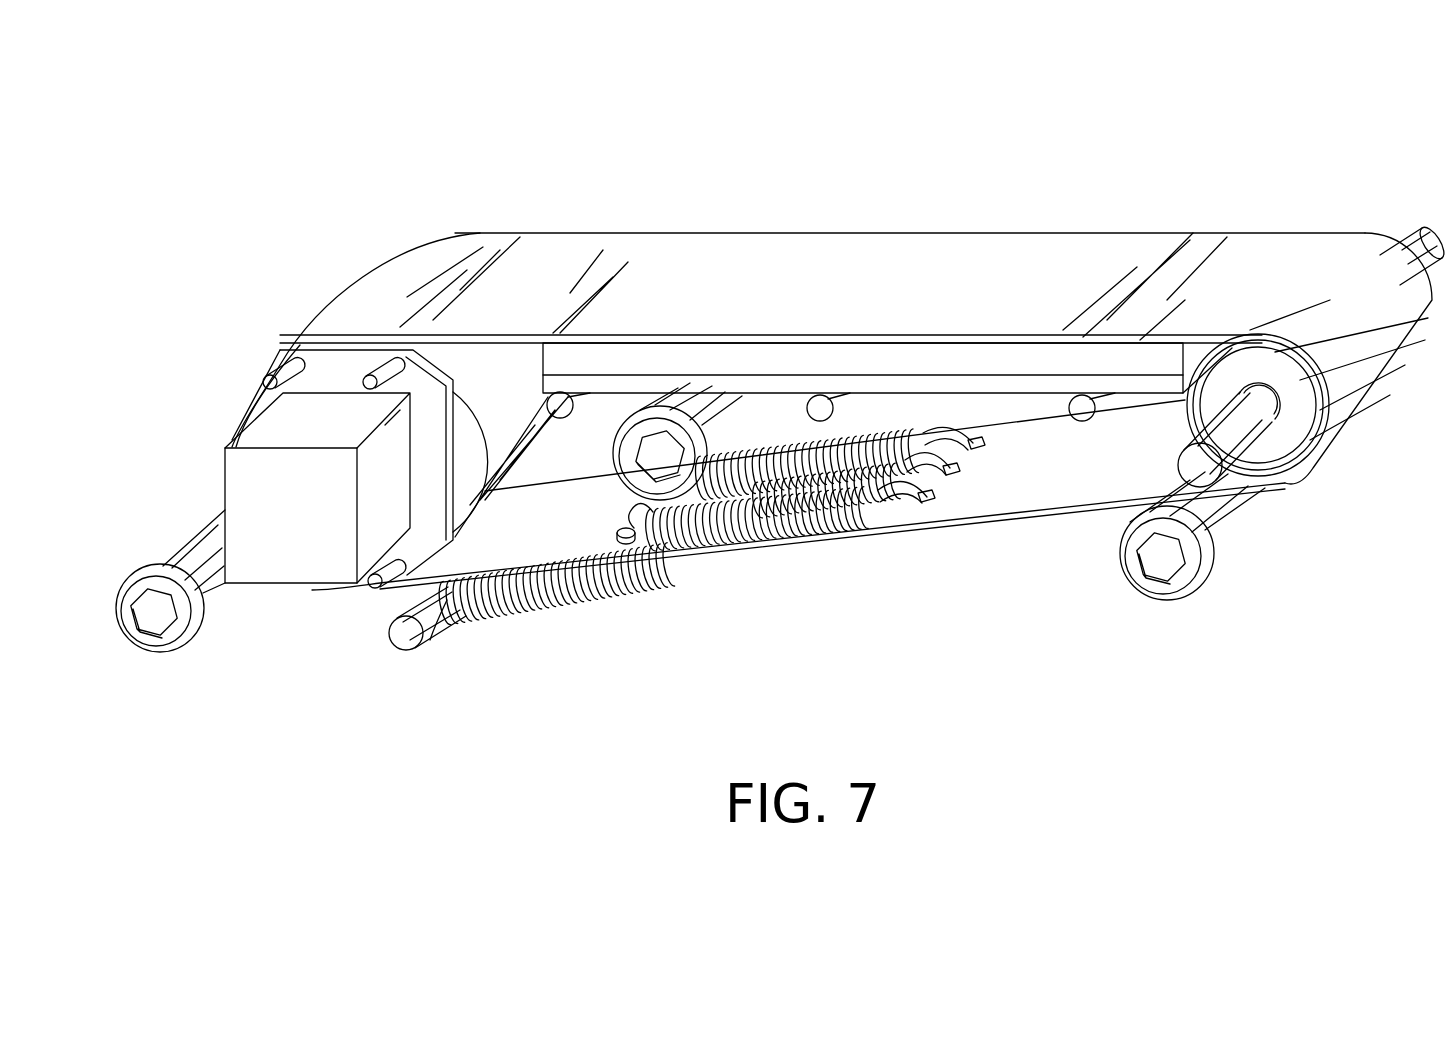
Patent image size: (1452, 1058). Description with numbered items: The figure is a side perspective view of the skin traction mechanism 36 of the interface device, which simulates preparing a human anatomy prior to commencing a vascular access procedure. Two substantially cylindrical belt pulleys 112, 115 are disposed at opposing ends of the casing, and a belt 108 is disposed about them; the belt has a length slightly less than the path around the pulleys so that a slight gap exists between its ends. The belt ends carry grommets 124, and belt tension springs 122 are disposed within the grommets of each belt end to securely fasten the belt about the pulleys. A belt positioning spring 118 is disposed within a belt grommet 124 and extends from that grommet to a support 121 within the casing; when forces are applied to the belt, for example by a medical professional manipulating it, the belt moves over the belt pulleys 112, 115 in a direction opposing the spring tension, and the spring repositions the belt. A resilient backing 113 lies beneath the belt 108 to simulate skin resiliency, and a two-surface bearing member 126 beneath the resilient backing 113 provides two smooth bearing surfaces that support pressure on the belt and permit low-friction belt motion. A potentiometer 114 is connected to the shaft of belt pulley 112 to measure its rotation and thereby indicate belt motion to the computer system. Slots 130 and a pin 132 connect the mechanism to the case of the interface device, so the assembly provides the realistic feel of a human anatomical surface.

The skin traction mechanism 36 is at (963, 87).
The belt 108 is at (1022, 233).
The belt pulley 112 is at (480, 445).
The resilient backing 113 is at (983, 363).
The potentiometer 114 is at (272, 592).
The belt pulley 115 is at (1256, 382).
The belt positioning spring 118 is at (622, 585).
The support 121 is at (405, 652).
The belt tension springs 122 is at (845, 435).
The grommets 124 is at (927, 500).
The two-surface bearing member 126 is at (738, 386).
The slots 130 is at (1320, 448).
The pin 132 is at (1183, 448).